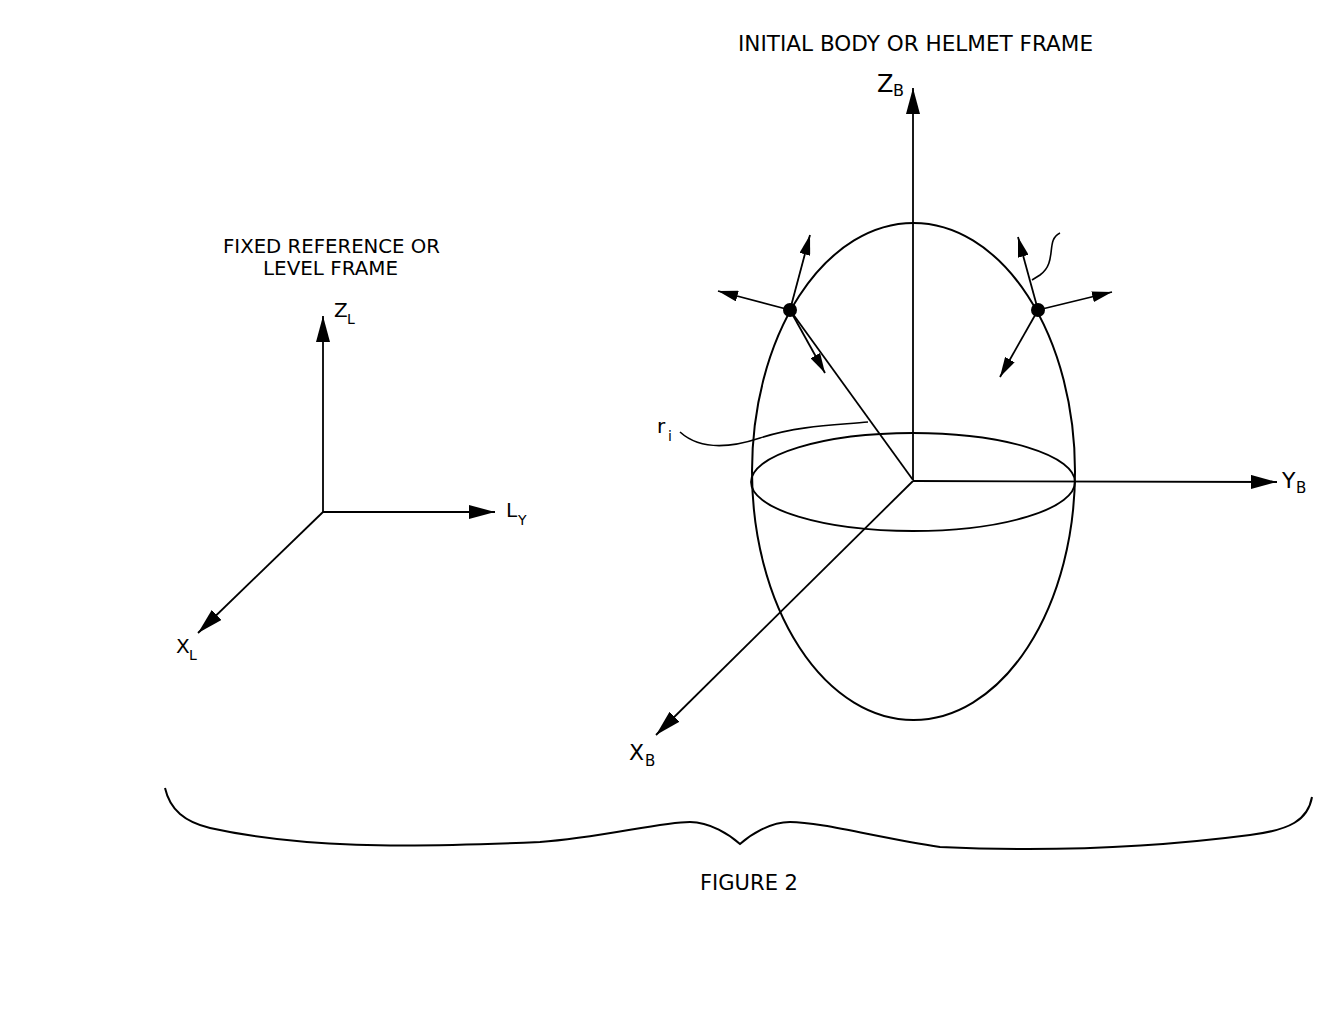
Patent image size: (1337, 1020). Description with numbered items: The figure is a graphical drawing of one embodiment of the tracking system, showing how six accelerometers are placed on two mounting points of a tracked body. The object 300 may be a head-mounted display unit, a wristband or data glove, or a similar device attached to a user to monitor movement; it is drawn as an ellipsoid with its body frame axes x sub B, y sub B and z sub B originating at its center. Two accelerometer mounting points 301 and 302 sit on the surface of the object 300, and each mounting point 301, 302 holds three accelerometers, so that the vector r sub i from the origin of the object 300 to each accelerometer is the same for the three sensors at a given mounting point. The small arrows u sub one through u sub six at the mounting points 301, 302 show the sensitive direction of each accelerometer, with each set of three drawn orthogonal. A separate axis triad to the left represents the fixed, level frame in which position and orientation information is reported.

The object 300 is at (1141, 640).
The accelerometer mounting point 301 is at (788, 305).
The accelerometer mounting point 302 is at (1045, 312).